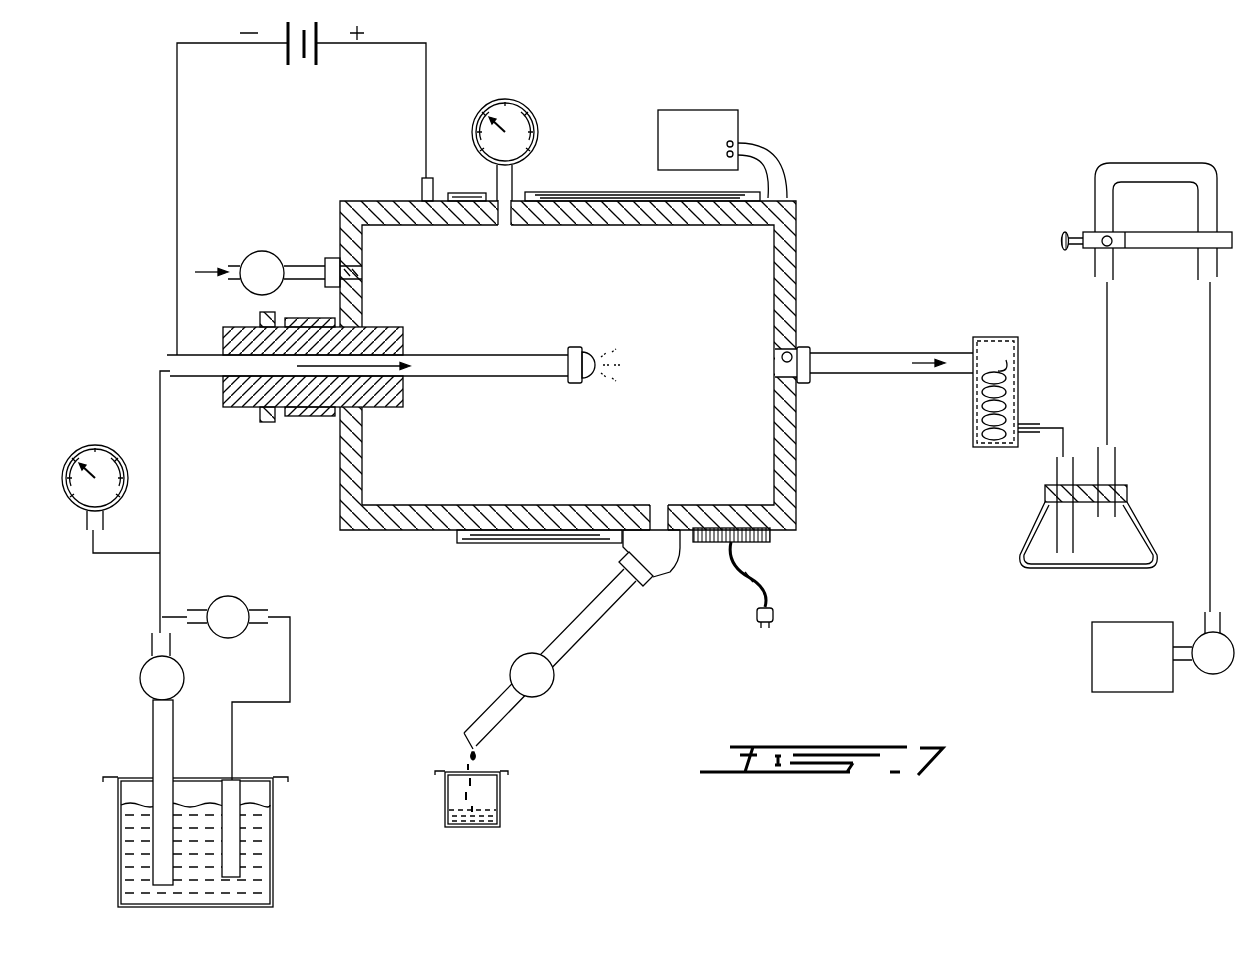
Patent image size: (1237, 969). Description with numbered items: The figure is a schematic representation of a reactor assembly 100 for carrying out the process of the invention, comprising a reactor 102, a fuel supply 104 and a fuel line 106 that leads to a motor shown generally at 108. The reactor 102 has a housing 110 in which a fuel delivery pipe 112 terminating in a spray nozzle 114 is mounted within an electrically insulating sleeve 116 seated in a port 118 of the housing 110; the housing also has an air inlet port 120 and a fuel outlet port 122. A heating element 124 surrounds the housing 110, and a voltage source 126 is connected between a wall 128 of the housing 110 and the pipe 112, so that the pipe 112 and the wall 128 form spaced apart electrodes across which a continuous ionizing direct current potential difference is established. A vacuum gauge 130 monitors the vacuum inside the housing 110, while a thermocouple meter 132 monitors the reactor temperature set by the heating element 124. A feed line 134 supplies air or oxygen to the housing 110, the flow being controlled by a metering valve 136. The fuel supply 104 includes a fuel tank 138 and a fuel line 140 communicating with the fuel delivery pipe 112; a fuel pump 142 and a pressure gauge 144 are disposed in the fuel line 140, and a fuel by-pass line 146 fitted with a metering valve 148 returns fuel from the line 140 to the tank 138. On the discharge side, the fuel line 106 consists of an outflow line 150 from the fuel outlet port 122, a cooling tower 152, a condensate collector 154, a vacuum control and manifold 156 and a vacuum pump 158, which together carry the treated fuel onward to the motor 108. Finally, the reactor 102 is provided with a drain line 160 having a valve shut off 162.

The reactor assembly 100 is at (830, 169).
The reactor 102 is at (383, 188).
The fuel supply 104 is at (140, 620).
The fuel line 106 is at (874, 350).
The motor 108 is at (1097, 640).
The housing 110 is at (368, 536).
The fuel delivery pipe 112 is at (502, 352).
The spray nozzle 114 is at (593, 350).
The electrically insulating sleeve 116 is at (245, 414).
The port 118 is at (303, 332).
The air inlet port 120 is at (363, 268).
The fuel outlet port 122 is at (793, 353).
The heating element 124 is at (585, 549).
The voltage source 126 is at (285, 70).
The wall 128 is at (405, 200).
The vacuum gauge 130 is at (518, 178).
The thermocouple meter 132 is at (700, 110).
The feed line 134 is at (236, 262).
The metering valve 136 is at (264, 250).
The fuel tank 138 is at (275, 817).
The fuel line 140 is at (152, 733).
The fuel pump 142 is at (140, 670).
The pressure gauge 144 is at (130, 556).
The fuel by-pass line 146 is at (293, 678).
The metering valve 148 is at (222, 595).
The outflow line 150 is at (877, 368).
The cooling tower 152 is at (965, 428).
The condensate collector 154 is at (1022, 544).
The vacuum control and manifold 156 is at (1115, 162).
The vacuum pump 158 is at (1203, 680).
The drain line 160 is at (585, 626).
The valve shut off 162 is at (508, 673).